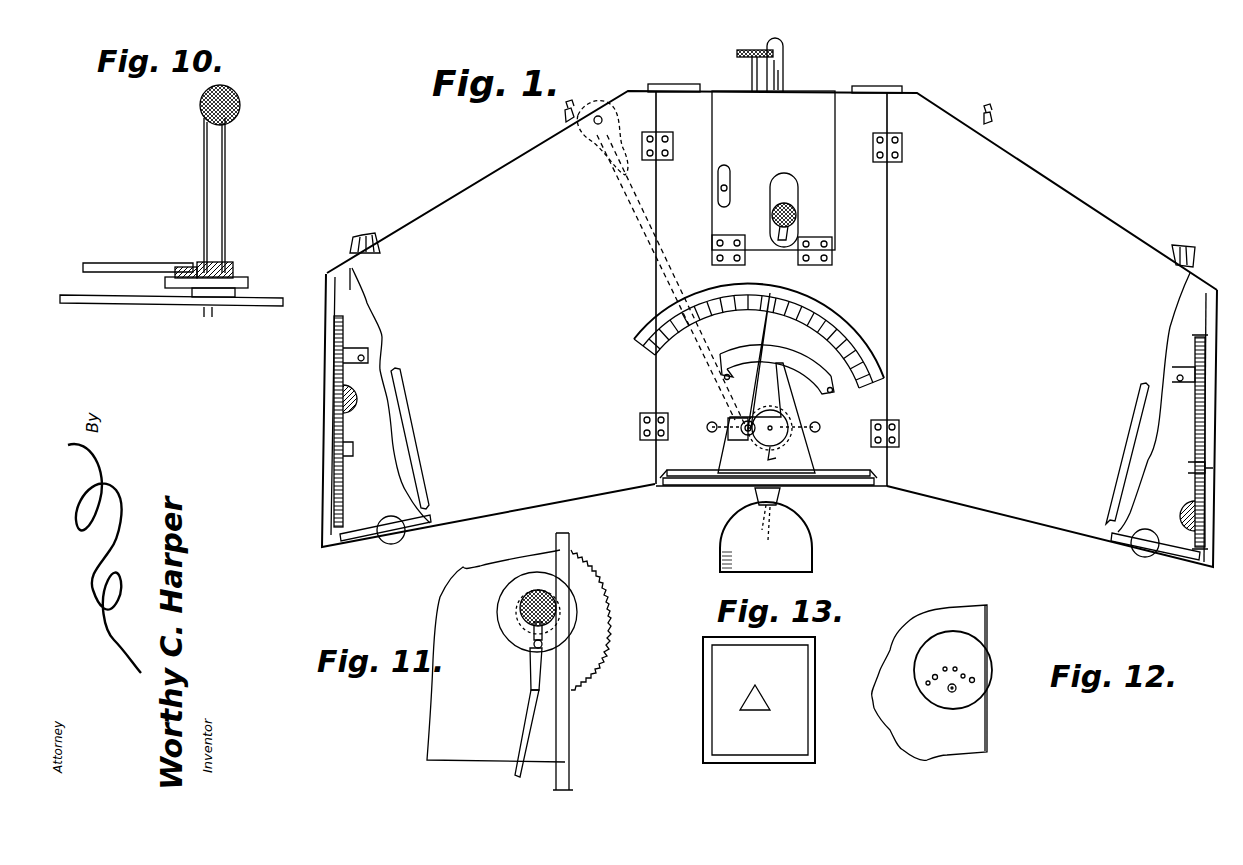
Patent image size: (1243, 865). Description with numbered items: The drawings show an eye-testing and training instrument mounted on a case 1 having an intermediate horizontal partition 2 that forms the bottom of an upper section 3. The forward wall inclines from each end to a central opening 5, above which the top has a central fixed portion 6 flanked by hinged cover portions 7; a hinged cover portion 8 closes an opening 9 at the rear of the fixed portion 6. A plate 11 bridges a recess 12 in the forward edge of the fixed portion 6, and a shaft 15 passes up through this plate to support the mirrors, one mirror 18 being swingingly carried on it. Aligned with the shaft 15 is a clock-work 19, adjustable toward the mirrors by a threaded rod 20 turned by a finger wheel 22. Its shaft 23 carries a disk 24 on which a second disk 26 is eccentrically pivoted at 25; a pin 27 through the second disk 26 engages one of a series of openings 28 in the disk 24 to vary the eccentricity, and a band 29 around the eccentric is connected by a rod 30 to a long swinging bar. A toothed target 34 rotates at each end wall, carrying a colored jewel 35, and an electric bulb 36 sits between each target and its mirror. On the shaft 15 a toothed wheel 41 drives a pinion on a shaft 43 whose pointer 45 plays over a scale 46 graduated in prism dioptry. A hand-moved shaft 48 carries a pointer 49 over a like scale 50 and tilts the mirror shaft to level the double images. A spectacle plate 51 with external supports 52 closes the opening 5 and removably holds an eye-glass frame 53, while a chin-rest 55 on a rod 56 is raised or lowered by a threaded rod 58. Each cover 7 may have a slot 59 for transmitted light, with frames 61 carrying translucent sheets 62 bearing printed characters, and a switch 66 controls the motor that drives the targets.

In FIG. 1, the case 1 is at (1052, 190).
In FIG. 1, the intermediate horizontal partition 2 is at (375, 483).
In FIG. 1, the upper section 3 is at (350, 285).
In FIG. 1, the central opening 5 is at (862, 486).
In FIG. 1, the central fixed portion 6 is at (890, 408).
In FIG. 1, the hinged cover portions 7 is at (428, 378).
In FIG. 1, the hinged cover portion 8 is at (771, 288).
In FIG. 1, the opening 9 is at (836, 214).
In FIG. 1, the plate 11 is at (800, 425).
In FIG. 1, the recess 12 is at (806, 457).
In FIG. 1, the shaft 15 is at (766, 383).
In FIG. 1, the mirror 18 is at (785, 74).
In FIG. 10, the clock-work 19 is at (284, 298).
In FIG. 11, the clock-work 19 is at (510, 562).
In FIG. 12, the clock-work 19 is at (975, 596).
In FIG. 1, the threaded rod 20 is at (752, 72).
In FIG. 1, the finger wheel 22 is at (737, 53).
In FIG. 10, the shaft 23 is at (212, 316).
In FIG. 1, the disk 24 is at (792, 203).
In FIG. 10, the disk 24 is at (248, 281).
In FIG. 11, the disk 24 is at (577, 610).
In FIG. 12, the disk 24 is at (966, 635).
In FIG. 10, the eccentric pivot 25 is at (182, 267).
In FIG. 11, the eccentric pivot 25 is at (530, 650).
In FIG. 12, the eccentric pivot 25 is at (953, 693).
In FIG. 10, the second disk 26 is at (227, 265).
In FIG. 11, the second disk 26 is at (560, 632).
In FIG. 10, the pin 27 is at (216, 258).
In FIG. 11, the pin 27 is at (530, 637).
In FIG. 10, the openings 28 is at (230, 297).
In FIG. 12, the openings 28 is at (932, 677).
In FIG. 10, the band 29 is at (236, 272).
In FIG. 11, the band 29 is at (543, 662).
In FIG. 10, the rod 30 is at (108, 262).
In FIG. 11, the rod 30 is at (522, 726).
In FIG. 1, the target 34 is at (334, 508).
In FIG. 1, the jewel 35 is at (334, 410).
In FIG. 1, the electric bulb 36 is at (389, 518).
In FIG. 1, the toothed wheel 41 is at (745, 420).
In FIG. 1, the shaft 43 is at (728, 415).
In FIG. 1, the pointer 45 is at (752, 355).
In FIG. 1, the scale 46 is at (835, 312).
In FIG. 1, the shaft 48 is at (795, 485).
In FIG. 1, the pointer 49 is at (790, 386).
In FIG. 1, the scale 50 is at (806, 356).
In FIG. 1, the spectacle plate 51 is at (683, 486).
In FIG. 1, the external supports 52 is at (748, 486).
In FIG. 1, the frame 53 is at (710, 487).
In FIG. 1, the chin-rest 55 is at (812, 556).
In FIG. 1, the rod 56 is at (765, 535).
In FIG. 1, the threaded rod 58 is at (608, 100).
In FIG. 1, the slot 59 is at (418, 428).
In FIG. 13, the frames 61 is at (815, 642).
In FIG. 13, the translucent sheets 62 is at (756, 683).
In FIG. 1, the switch 66 is at (564, 119).